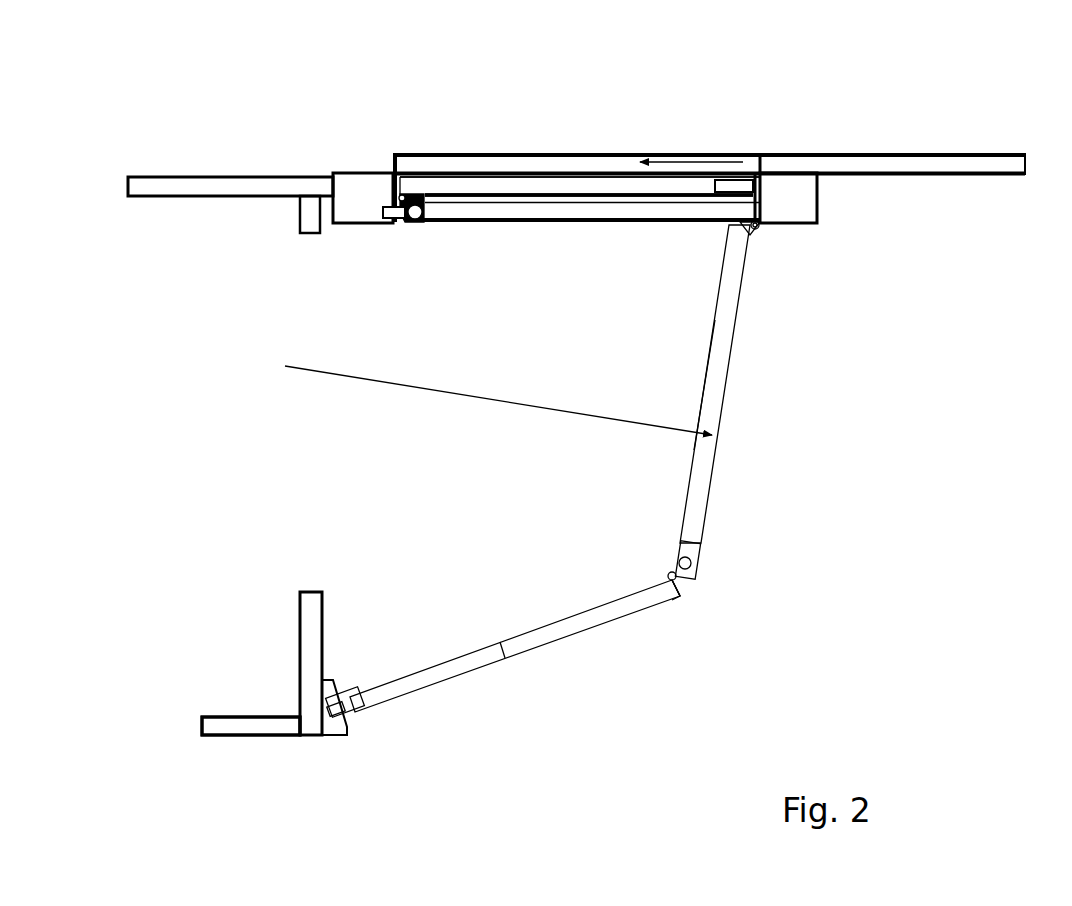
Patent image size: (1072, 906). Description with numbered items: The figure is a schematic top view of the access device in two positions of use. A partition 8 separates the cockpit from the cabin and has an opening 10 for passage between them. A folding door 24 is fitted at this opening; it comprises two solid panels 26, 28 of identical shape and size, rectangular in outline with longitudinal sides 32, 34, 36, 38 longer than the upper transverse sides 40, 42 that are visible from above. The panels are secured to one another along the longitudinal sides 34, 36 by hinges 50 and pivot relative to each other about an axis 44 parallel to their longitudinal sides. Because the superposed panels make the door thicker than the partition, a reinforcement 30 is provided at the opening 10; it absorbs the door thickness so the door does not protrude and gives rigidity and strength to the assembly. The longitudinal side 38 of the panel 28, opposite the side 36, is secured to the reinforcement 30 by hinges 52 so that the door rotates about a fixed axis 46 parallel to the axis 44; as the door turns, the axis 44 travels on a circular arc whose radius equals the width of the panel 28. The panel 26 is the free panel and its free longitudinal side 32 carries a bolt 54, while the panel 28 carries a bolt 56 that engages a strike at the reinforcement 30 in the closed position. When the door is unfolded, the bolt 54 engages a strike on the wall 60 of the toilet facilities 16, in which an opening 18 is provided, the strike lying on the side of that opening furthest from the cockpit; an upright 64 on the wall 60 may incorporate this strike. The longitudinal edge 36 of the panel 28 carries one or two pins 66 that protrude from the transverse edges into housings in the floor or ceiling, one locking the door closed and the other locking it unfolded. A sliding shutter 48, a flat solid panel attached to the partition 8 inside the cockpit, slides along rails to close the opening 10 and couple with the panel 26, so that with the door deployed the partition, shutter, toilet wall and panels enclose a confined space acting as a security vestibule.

The partition 8 is at (268, 186).
The opening 10 is at (396, 152).
The toilet facilities 16 is at (258, 660).
The opening 18 is at (300, 366).
The folding door 24 is at (690, 182).
The free panel 26 is at (590, 190).
The panel 28 is at (503, 210).
The reinforcement 30 is at (350, 190).
The free longitudinal side 32 is at (350, 725).
The longitudinal side 34 is at (697, 578).
The longitudinal side 36 is at (700, 560).
The longitudinal side 38 is at (752, 228).
The transverse side 40 is at (460, 670).
The transverse side 42 is at (703, 468).
The axis 44 is at (672, 574).
The axis 46 is at (757, 226).
The shutter 48 is at (895, 157).
The hinges 50 is at (658, 580).
The hinges 52 is at (760, 224).
The bolt 54 is at (735, 182).
The bolt 56 is at (397, 220).
The wall 60 is at (300, 740).
The upright 64 is at (333, 740).
The pins 66 is at (420, 222).